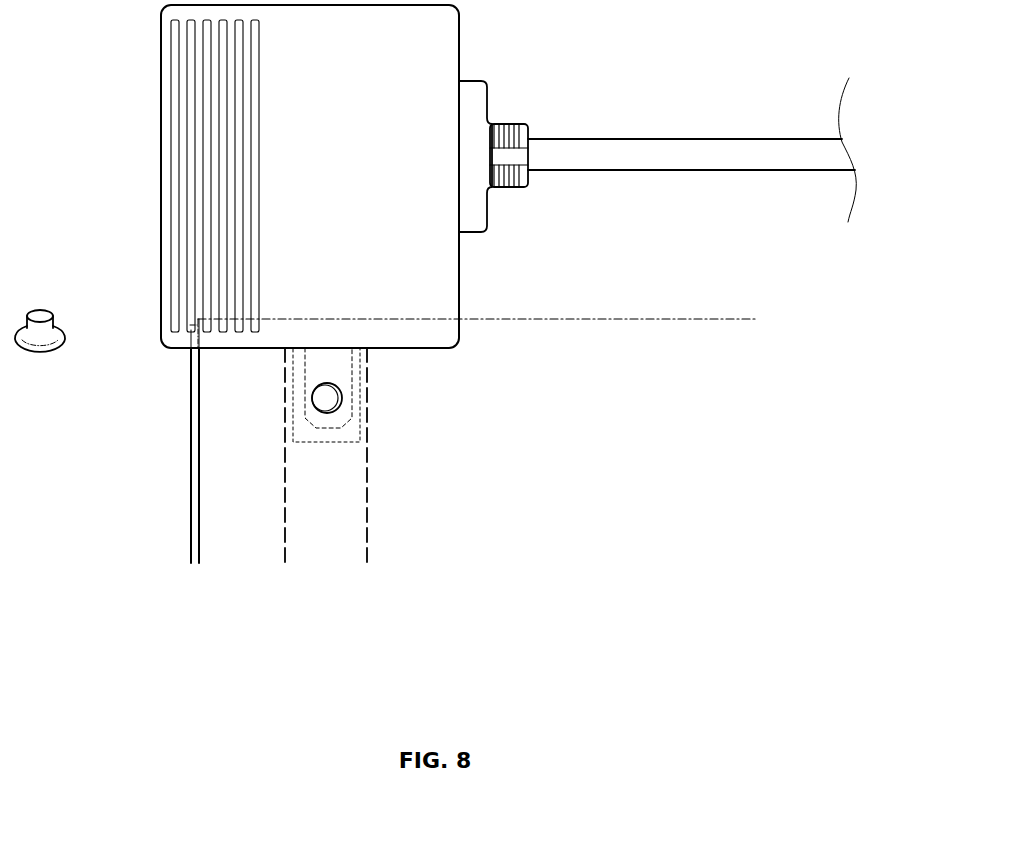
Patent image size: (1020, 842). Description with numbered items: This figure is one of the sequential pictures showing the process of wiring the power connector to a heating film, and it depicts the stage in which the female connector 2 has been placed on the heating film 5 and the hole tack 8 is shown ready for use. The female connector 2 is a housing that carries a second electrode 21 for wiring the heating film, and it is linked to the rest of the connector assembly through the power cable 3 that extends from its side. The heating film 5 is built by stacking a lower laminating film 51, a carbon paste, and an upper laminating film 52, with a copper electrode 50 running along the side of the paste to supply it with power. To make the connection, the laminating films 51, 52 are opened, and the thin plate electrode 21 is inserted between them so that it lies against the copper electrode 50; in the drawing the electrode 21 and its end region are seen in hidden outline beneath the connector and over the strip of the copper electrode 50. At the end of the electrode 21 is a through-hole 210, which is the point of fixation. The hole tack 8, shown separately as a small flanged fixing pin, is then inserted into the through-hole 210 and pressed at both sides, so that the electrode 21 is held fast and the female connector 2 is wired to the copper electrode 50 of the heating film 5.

The female connector 2 is at (347, 179).
The power cable 3 is at (662, 141).
The heating film 5 is at (499, 469).
The hole tack 8 is at (41, 306).
The second electrode for wiring a heating film 21 is at (305, 357).
The copper electrode 50 is at (313, 520).
The lower laminating film 51 is at (191, 541).
The upper laminating film 52 is at (219, 502).
The through-hole 210 is at (327, 398).